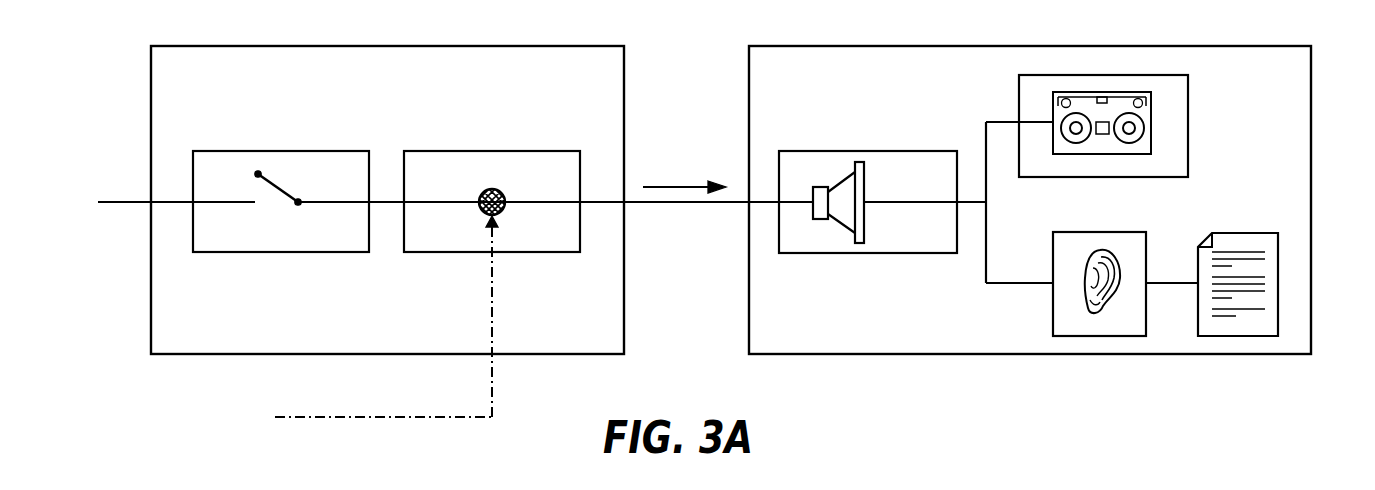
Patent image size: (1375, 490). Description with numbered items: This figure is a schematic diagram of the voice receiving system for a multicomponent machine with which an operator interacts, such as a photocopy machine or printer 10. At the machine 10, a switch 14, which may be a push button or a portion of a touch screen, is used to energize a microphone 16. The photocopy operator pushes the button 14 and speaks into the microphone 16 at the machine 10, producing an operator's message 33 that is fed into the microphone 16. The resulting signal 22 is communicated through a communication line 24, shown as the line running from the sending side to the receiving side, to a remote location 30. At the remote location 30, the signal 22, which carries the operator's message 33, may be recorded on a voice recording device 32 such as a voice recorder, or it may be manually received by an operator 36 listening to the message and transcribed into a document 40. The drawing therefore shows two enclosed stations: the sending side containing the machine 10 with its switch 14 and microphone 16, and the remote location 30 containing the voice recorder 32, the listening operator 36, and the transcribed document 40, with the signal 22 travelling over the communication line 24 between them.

The photocopy machine or printer 10 is at (151, 136).
The switch 14 is at (280, 151).
The microphone 16 is at (492, 188).
The signal 22 is at (680, 187).
The communication line 24 is at (675, 202).
The remote location 30 is at (1311, 185).
The voice recording device 32 is at (1187, 121).
The operator's message 33 is at (367, 417).
The operator 36 is at (1098, 232).
The document 40 is at (1228, 233).